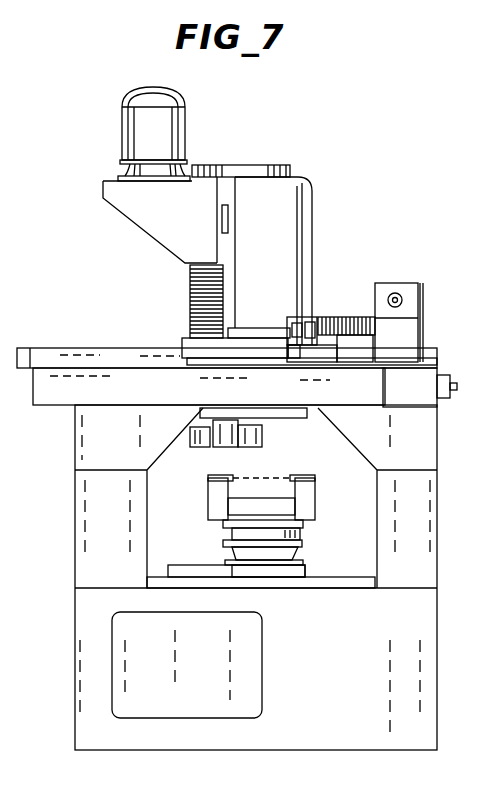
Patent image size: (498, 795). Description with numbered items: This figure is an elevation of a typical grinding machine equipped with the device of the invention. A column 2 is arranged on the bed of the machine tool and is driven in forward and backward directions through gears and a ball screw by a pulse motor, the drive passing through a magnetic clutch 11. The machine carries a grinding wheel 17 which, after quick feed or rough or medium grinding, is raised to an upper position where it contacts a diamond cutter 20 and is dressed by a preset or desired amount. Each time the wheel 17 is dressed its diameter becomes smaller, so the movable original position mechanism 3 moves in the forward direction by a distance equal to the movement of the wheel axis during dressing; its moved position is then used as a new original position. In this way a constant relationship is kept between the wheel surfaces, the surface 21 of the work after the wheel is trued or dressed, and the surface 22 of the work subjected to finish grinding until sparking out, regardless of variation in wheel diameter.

The column 2 is at (295, 192).
The movable original position mechanism 3 is at (328, 313).
The magnetic clutch 11 is at (423, 445).
The grinding wheel 17 is at (262, 440).
The diamond cutter 20 is at (202, 448).
The surface of the work after the wheel is trued or dressed 21 is at (280, 516).
The surface of the work subjected to finish grinding 22 is at (220, 495).